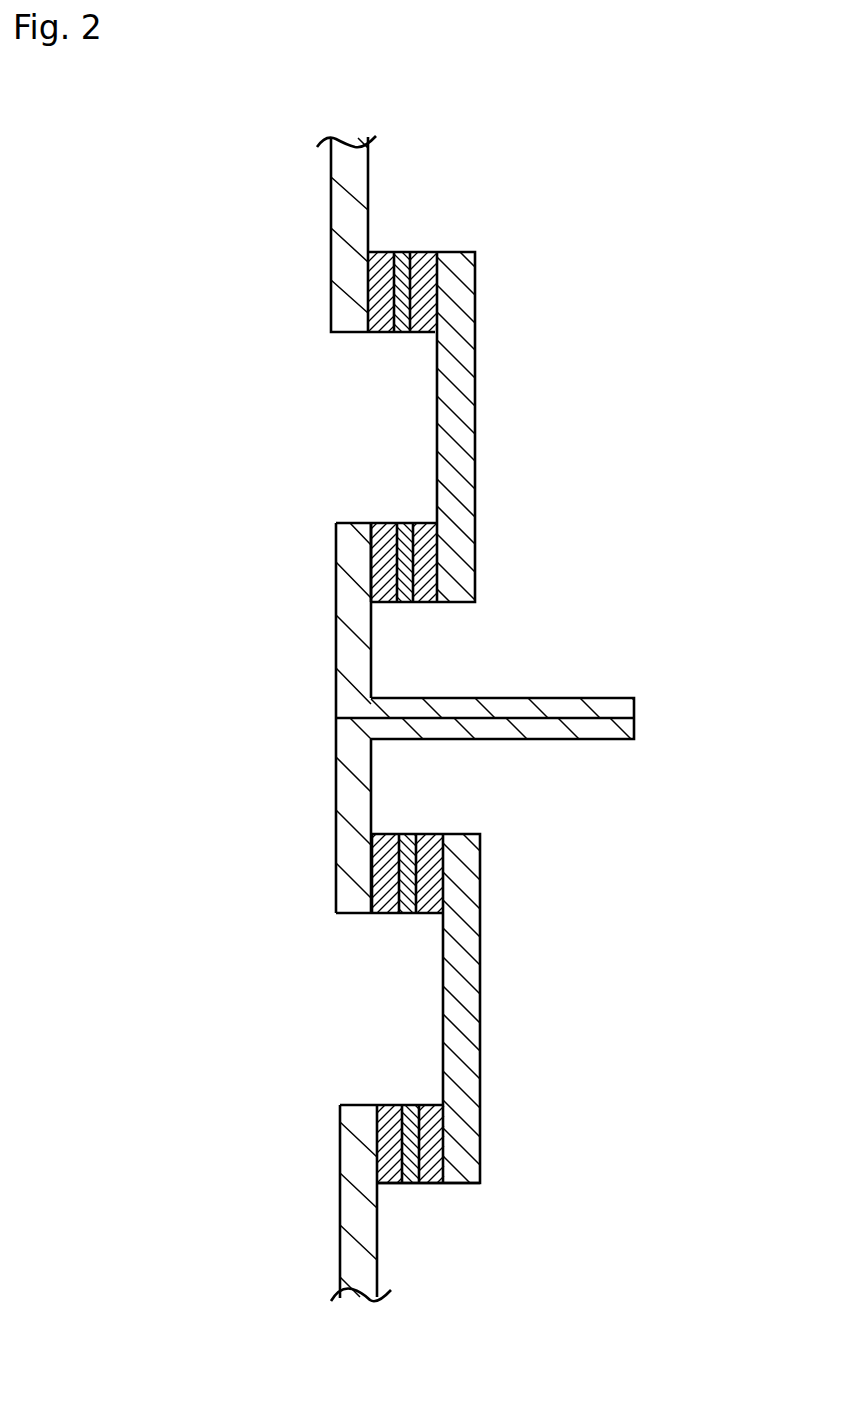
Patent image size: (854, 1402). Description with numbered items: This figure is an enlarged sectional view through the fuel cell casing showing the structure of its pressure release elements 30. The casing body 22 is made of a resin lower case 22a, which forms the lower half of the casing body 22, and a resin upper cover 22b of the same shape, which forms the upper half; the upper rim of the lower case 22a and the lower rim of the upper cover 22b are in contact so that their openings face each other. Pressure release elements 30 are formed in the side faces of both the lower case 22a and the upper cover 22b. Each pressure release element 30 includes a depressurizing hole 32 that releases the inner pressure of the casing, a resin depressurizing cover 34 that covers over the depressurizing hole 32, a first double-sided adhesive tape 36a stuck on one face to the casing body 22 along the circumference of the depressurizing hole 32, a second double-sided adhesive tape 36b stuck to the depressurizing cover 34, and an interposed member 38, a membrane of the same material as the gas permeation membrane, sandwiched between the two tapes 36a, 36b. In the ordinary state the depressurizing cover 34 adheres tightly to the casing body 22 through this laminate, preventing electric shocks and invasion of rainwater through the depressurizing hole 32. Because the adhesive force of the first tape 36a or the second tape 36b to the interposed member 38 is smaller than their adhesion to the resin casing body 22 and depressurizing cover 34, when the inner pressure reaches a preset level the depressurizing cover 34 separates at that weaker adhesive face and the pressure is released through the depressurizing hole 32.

The casing body 22 is at (403, 718).
The lower case 22a is at (352, 615).
The upper cover 22b is at (300, 815).
The pressure release element 30 is at (451, 718).
The depressurizing hole 32 is at (353, 437).
The depressurizing cover 34 is at (452, 298).
The first double-sided adhesive tape 36a is at (375, 252).
The second double-sided adhesive tape 36b is at (422, 252).
The interposed member 38 is at (397, 252).